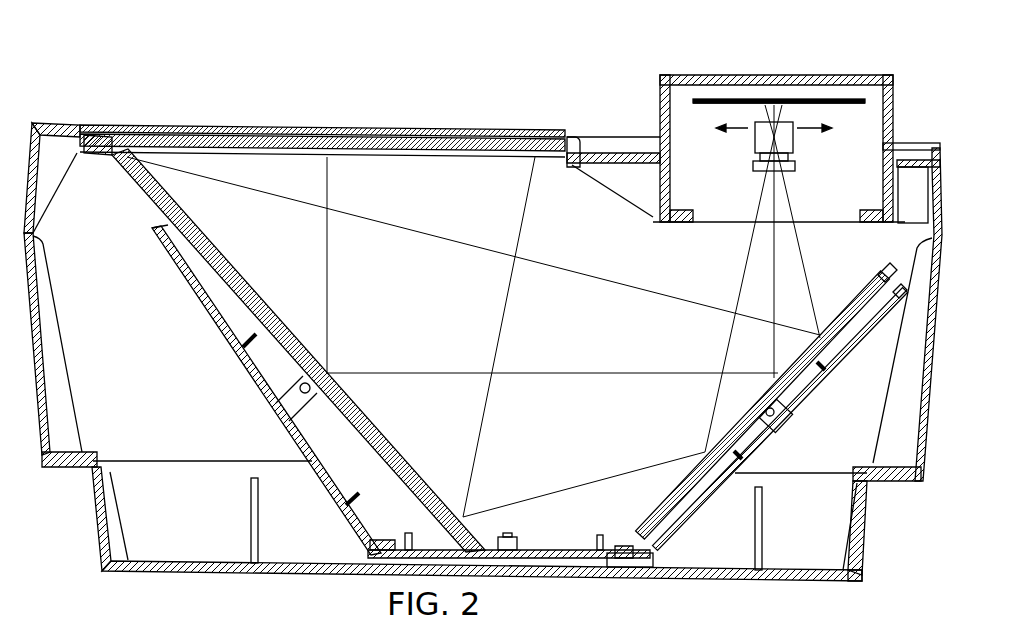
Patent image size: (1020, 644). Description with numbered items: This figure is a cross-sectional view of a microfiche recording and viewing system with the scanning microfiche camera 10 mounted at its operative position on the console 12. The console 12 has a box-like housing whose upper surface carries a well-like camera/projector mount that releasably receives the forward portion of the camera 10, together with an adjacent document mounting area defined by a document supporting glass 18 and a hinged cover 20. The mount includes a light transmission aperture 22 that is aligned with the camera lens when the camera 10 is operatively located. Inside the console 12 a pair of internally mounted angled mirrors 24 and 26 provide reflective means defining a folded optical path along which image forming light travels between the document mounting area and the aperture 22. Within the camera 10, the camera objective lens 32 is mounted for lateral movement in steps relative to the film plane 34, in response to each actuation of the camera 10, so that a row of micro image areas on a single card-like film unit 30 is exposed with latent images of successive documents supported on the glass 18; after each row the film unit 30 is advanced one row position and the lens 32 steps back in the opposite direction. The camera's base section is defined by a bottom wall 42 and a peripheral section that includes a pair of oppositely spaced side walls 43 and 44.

The scanning microfiche camera 10 is at (659, 68).
The console 12 is at (597, 124).
The document supporting glass 18 is at (483, 150).
The hinged cover 20 is at (86, 134).
The light transmission aperture 22 is at (716, 223).
The angled mirror 24 is at (839, 316).
The angled mirror 26 is at (241, 281).
The film unit 30 is at (818, 99).
The camera objective lens 32 is at (795, 146).
The film plane 34 is at (835, 104).
The bottom wall 42 is at (767, 82).
The side wall 43 is at (660, 100).
The side wall 44 is at (893, 105).